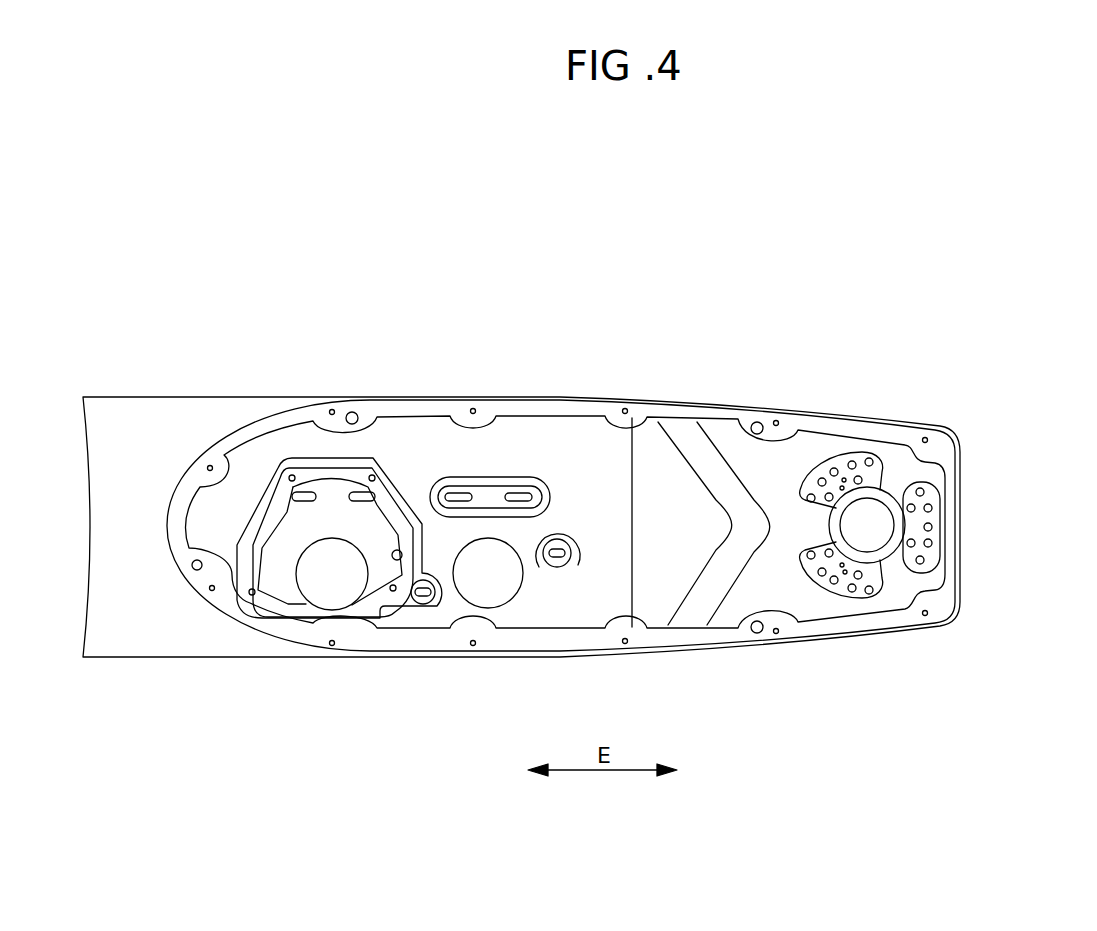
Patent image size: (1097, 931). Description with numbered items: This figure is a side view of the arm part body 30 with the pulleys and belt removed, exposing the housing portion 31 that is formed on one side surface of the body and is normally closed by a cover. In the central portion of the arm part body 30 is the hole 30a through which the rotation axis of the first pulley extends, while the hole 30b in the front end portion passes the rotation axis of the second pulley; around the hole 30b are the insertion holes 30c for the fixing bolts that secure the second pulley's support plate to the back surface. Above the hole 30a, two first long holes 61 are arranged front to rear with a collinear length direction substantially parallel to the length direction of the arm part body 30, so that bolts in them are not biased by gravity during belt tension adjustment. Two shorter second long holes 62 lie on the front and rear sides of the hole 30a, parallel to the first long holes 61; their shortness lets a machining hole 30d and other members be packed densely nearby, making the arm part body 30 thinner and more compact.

The arm part body 30 is at (188, 650).
The hole 30a is at (497, 597).
The hole 30b is at (872, 520).
The insertion holes 30c is at (870, 457).
The machining hole 30d is at (280, 557).
The housing portion 31 is at (567, 467).
The first long holes 61 is at (460, 482).
The second long holes 62 is at (557, 563).